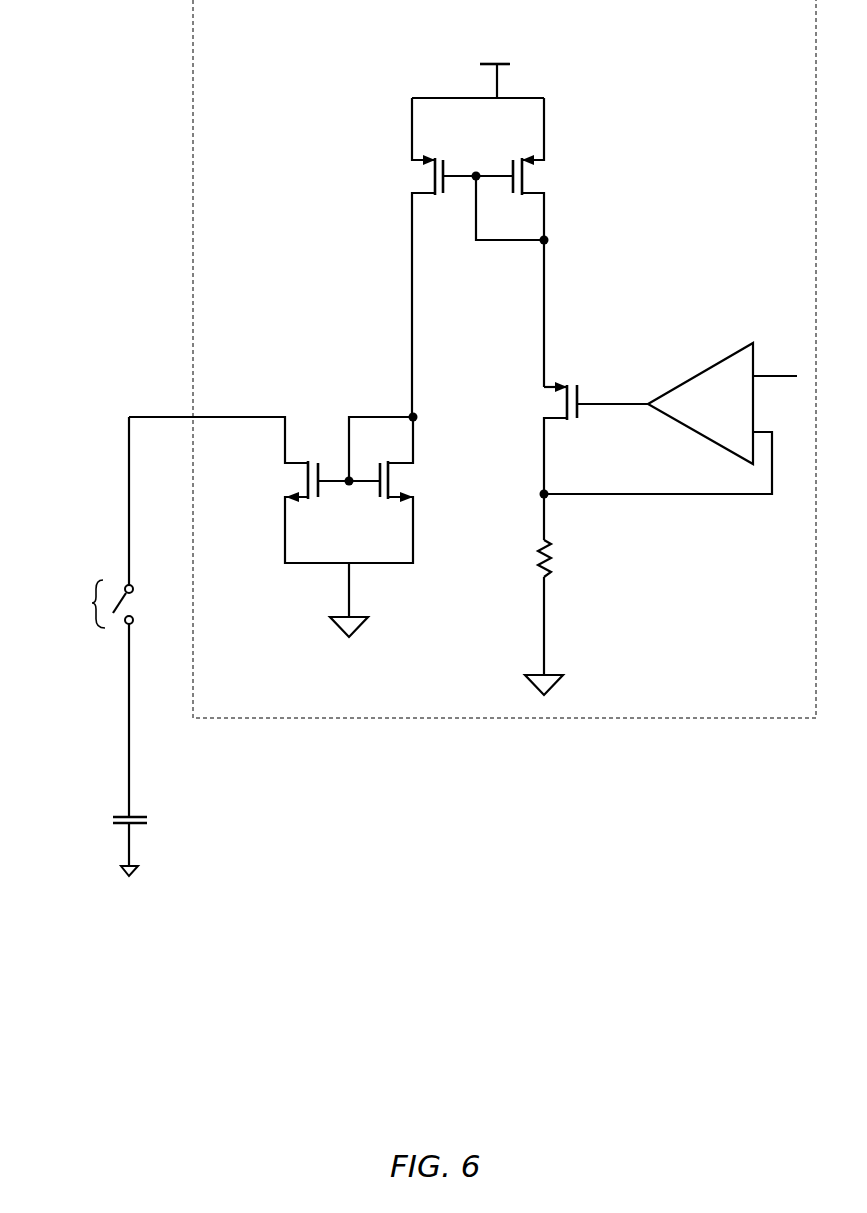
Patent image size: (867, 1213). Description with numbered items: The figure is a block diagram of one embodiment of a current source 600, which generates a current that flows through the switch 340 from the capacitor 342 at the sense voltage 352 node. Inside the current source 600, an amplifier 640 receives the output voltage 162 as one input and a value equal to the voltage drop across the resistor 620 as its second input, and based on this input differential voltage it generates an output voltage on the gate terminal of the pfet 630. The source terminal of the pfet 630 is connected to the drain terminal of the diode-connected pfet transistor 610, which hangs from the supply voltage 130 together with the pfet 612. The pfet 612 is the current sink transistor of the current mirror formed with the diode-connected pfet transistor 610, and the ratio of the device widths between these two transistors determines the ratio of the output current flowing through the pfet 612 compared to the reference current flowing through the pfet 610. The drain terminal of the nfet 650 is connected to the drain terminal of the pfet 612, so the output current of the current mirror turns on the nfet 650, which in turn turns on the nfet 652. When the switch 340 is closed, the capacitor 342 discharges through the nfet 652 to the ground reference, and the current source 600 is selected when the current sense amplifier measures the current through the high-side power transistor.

The current source 600 is at (504, 359).
The VDD 130 is at (498, 69).
The pfet 612 is at (433, 175).
The diode-connected pfet transistor 610 is at (547, 153).
The nfet 652 is at (308, 482).
The nfet 650 is at (410, 485).
The pfet 630 is at (577, 393).
The amplifier 640 is at (687, 430).
The output voltage VOUT 162 is at (783, 373).
The resistor R1 620 is at (540, 573).
The switch S2 340 is at (92, 603).
The sense voltage 352 is at (128, 703).
The capacitor C1 342 is at (113, 824).